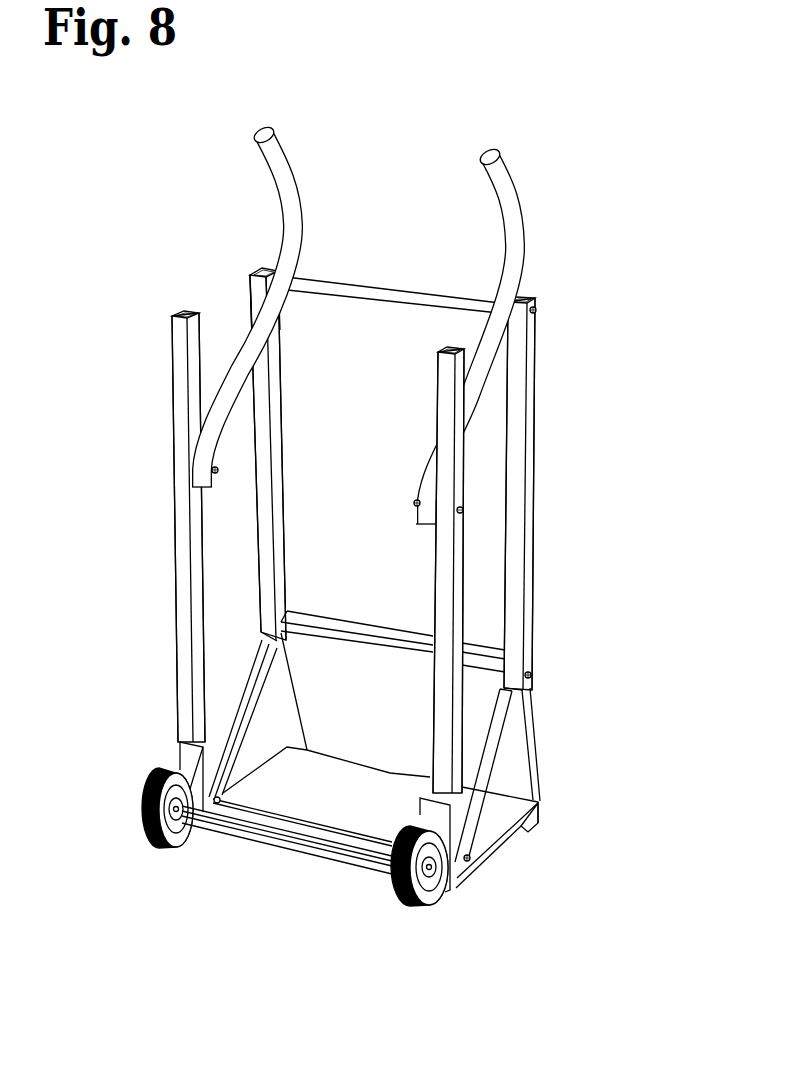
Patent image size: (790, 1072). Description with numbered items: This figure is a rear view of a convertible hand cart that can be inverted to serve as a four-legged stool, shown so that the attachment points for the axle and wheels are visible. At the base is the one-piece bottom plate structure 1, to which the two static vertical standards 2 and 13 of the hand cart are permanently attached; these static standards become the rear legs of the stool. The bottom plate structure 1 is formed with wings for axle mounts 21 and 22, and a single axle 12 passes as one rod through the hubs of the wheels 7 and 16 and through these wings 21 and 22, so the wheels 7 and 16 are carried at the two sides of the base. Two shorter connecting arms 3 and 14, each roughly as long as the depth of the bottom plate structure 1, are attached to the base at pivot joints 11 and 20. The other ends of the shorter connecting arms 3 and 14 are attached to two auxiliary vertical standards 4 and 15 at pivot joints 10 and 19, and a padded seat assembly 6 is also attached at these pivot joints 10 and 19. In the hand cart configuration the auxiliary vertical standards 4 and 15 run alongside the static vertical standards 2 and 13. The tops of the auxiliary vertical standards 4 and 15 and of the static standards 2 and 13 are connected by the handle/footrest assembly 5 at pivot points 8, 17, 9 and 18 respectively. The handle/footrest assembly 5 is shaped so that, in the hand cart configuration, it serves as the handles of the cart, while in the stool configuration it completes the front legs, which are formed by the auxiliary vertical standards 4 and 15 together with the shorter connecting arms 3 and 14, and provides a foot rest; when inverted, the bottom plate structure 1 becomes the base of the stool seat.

The bottom plate structure 1 is at (500, 813).
The static vertical standard 2 is at (440, 590).
The shorter connecting arm 3 is at (505, 750).
The auxiliary vertical standard 4 is at (528, 508).
The handle/footrest assembly 5 is at (300, 172).
The padded seat assembly 6 is at (355, 710).
The wheel 7 is at (423, 905).
The pivot point 8 is at (538, 309).
The pivot point 9 is at (414, 502).
The pivot joint 10 is at (534, 672).
The pivot joint 11 is at (480, 865).
The axle 12 is at (236, 818).
The static vertical standard 13 is at (185, 585).
The shorter connecting arm 14 is at (243, 697).
The auxiliary vertical standard 15 is at (275, 410).
The wheel 16 is at (175, 838).
The pivot point 17 is at (248, 273).
The pivot point 18 is at (217, 477).
The pivot joint 19 is at (282, 630).
The pivot joint 20 is at (223, 798).
The wing for axle mount 21 is at (425, 818).
The wing for axle mount 22 is at (197, 788).